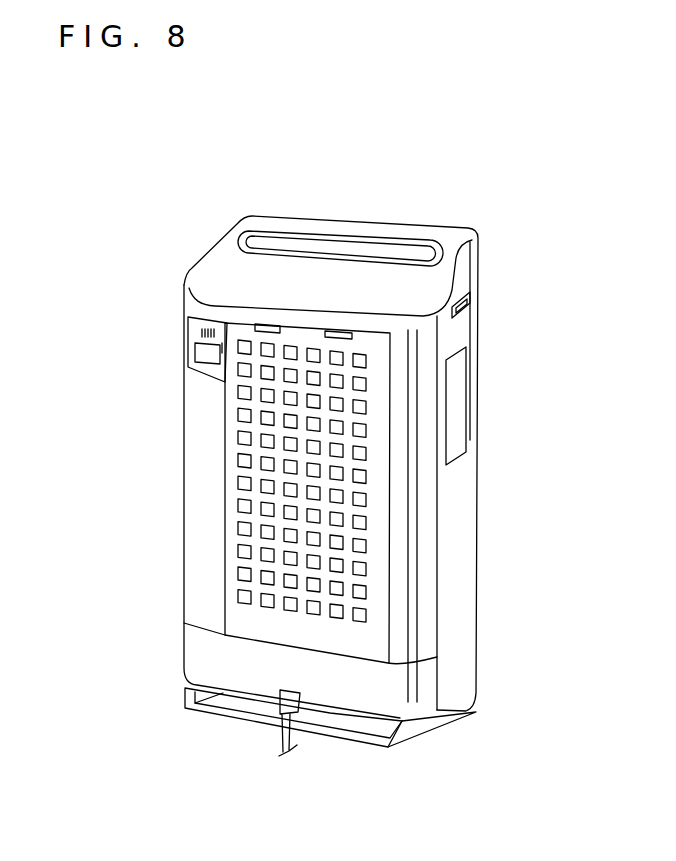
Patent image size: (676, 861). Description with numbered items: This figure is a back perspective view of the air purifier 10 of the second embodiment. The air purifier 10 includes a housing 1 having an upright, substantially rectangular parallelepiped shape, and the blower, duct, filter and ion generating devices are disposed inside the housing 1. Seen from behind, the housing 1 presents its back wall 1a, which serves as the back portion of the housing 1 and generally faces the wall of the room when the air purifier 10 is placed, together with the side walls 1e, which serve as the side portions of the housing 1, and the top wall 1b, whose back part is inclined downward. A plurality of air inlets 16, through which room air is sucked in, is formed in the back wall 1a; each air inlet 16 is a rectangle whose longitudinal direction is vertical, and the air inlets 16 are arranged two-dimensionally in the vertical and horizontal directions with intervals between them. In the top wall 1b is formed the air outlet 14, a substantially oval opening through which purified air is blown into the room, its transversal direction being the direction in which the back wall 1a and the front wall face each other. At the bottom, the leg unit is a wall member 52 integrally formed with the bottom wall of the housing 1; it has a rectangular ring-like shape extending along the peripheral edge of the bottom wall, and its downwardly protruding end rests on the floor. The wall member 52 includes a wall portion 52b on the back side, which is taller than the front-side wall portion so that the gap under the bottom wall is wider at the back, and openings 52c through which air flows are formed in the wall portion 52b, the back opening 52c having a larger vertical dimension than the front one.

The air purifier 10 is at (270, 196).
The housing 1 is at (176, 465).
The back wall 1a is at (197, 545).
The top wall 1b is at (217, 275).
The side walls 1e is at (460, 597).
The air outlet 14 is at (353, 237).
The air inlets 16 is at (362, 523).
The wall member 52 is at (431, 736).
The wall portion 52b is at (343, 737).
The openings 52c is at (222, 703).